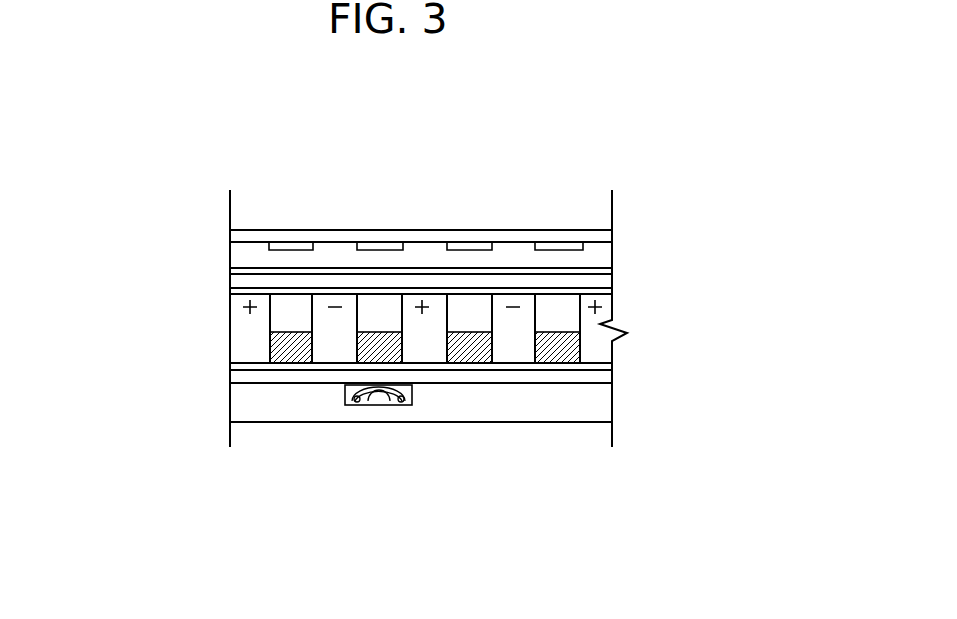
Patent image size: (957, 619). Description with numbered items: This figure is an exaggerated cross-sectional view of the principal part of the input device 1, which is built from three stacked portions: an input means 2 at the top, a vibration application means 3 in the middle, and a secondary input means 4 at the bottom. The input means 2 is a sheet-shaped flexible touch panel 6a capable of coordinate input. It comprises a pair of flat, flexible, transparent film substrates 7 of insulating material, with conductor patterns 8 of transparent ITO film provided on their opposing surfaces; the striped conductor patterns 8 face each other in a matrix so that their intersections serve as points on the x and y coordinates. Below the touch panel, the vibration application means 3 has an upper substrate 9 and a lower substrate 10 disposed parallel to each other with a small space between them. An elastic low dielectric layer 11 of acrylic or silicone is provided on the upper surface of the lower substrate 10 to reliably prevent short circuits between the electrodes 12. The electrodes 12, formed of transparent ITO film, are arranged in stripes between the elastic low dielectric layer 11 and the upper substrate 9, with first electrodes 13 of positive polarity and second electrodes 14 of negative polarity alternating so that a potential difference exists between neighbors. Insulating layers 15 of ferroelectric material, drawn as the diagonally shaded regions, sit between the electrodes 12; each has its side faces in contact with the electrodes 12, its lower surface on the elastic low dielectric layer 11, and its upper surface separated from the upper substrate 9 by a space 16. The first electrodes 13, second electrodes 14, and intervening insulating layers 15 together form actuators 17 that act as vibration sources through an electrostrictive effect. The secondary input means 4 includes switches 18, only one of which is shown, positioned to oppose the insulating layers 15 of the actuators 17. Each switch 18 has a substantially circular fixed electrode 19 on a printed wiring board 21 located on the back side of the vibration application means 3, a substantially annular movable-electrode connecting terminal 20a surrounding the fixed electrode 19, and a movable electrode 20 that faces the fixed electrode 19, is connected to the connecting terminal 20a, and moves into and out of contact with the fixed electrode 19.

The input device 1 is at (347, 210).
The input means 2 is at (483, 266).
The vibration application means 3 is at (427, 326).
The secondary input means 4 is at (467, 486).
The touch panel 6a is at (528, 263).
The film substrates 7 is at (613, 237).
The conductor patterns 8 is at (613, 255).
The upper substrate 9 is at (245, 290).
The lower substrate 10 is at (310, 382).
The elastic low dielectric layer 11 is at (302, 372).
The electrodes 12 is at (343, 321).
The first electrodes 13 is at (238, 305).
The second electrodes 14 is at (229, 378).
The insulating layers 15 is at (327, 343).
The space 16 is at (275, 320).
The actuators 17 is at (343, 321).
The switches 18 is at (446, 484).
The fixed electrode 19 is at (383, 402).
The movable electrode 20 is at (418, 404).
The movable-electrode connecting terminal 20a is at (358, 400).
The printed wiring board 21 is at (437, 412).